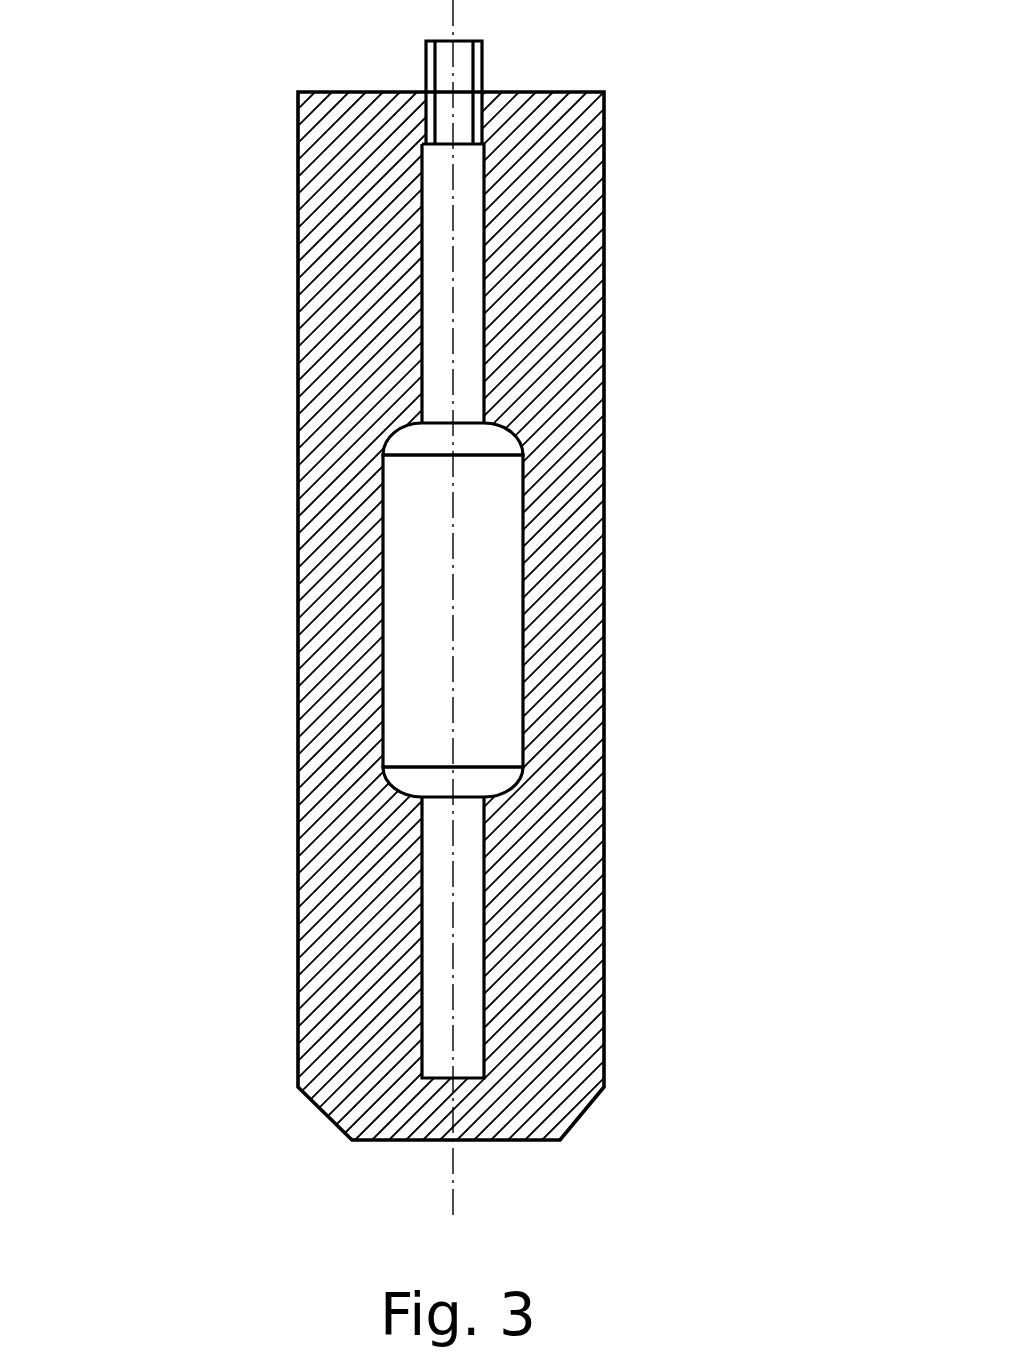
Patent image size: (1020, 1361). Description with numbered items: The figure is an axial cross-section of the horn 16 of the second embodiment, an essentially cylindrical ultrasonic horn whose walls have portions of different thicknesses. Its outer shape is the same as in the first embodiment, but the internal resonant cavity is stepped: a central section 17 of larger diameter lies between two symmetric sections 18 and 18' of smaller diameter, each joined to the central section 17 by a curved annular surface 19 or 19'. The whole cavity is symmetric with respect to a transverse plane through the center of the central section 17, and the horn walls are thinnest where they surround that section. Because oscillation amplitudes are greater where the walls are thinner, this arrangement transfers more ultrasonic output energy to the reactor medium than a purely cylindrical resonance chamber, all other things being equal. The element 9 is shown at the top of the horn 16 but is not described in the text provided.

The pin 9 is at (460, 80).
The horn 16 is at (605, 695).
The central section 17 is at (487, 597).
The section of smaller diameter 18 is at (277, 937).
The section of smaller diameter 18' is at (615, 283).
The curved annular surface 19 is at (297, 411).
The curved annular surface 19' is at (296, 743).